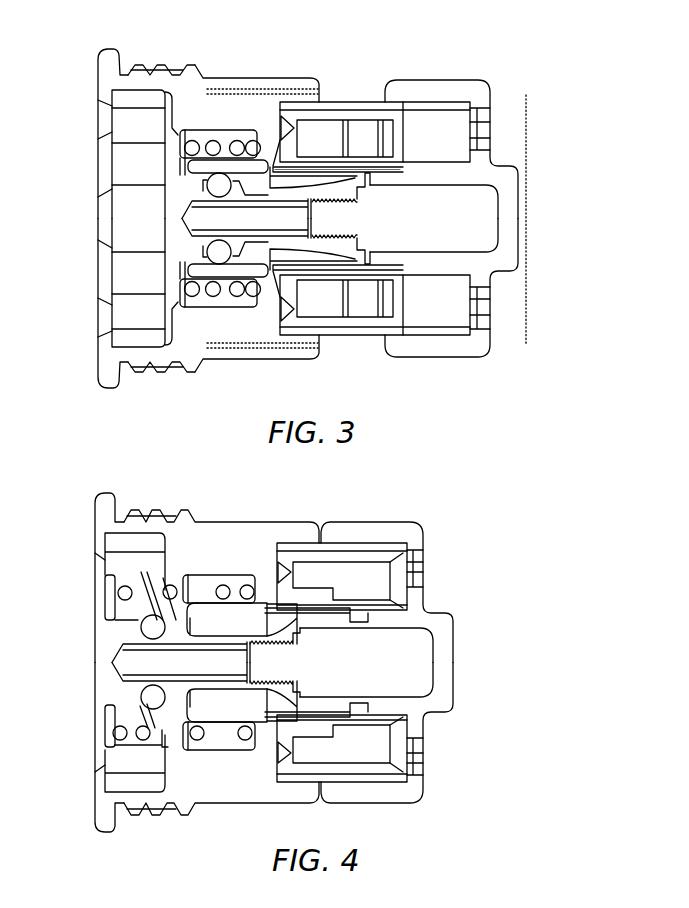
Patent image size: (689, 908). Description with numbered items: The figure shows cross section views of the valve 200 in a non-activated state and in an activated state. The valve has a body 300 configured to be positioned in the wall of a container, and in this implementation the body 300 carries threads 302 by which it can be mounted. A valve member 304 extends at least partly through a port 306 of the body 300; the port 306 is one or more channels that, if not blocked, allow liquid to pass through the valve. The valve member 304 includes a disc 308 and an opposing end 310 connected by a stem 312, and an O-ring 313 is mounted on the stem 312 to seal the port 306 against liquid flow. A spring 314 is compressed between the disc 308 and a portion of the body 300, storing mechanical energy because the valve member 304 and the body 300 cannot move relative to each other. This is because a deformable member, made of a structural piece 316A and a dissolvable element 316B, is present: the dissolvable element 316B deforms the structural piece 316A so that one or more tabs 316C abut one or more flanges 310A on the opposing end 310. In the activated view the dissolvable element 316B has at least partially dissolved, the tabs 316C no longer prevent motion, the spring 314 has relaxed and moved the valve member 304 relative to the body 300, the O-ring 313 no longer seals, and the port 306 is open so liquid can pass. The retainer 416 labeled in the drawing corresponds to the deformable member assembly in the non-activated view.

In FIG. 3, the valve 200 is at (317, 225).
In FIG. 4, the valve 200 is at (282, 679).
In FIG. 3, the body 300 is at (98, 70).
In FIG. 4, the body 300 is at (95, 504).
In FIG. 3, the threads 302 is at (148, 73).
In FIG. 3, the valve member 304 is at (536, 138).
In FIG. 4, the valve member 304 is at (471, 622).
In FIG. 3, the port 306 is at (256, 188).
In FIG. 4, the port 306 is at (209, 632).
In FIG. 3, the disc 308 is at (164, 260).
In FIG. 4, the disc 308 is at (95, 700).
In FIG. 3, the opposing end 310 is at (493, 347).
In FIG. 3, the flanges 310A is at (373, 175).
In FIG. 3, the stem 312 is at (310, 247).
In FIG. 3, the O-ring 313 is at (208, 251).
In FIG. 4, the O-ring 313 is at (150, 589).
In FIG. 3, the spring 314 is at (233, 137).
In FIG. 4, the spring 314 is at (147, 745).
In FIG. 3, the structural piece 316A is at (372, 334).
In FIG. 3, the dissolvable element 316B is at (384, 135).
In FIG. 3, the tabs 316C is at (360, 177).
In FIG. 4, the tabs 316C is at (368, 616).
In FIG. 3, the retainer 416 is at (348, 92).